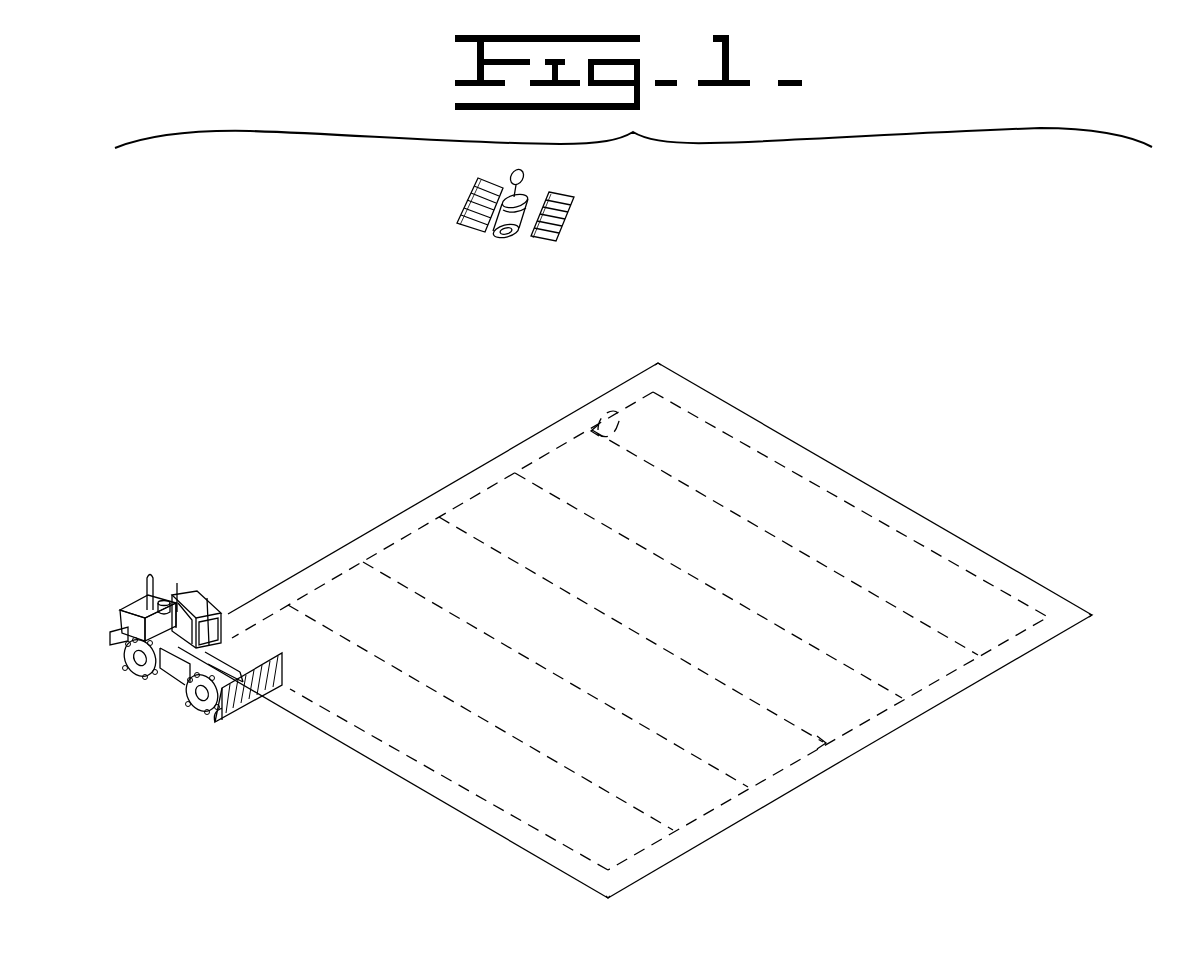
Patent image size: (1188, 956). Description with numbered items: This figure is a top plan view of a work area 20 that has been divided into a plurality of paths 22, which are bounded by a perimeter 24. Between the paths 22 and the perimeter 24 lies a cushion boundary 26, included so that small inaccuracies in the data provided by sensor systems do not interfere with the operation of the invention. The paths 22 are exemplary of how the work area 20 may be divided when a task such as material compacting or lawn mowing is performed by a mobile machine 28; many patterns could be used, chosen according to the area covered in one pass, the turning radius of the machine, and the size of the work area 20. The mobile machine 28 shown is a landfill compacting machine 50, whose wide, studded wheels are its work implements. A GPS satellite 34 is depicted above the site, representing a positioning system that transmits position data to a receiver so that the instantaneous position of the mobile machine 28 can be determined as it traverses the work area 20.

The work area 20 is at (912, 463).
The paths 22 is at (600, 414).
The perimeter 24 is at (1025, 655).
The cushion boundary 26 is at (852, 746).
The mobile machine 28 is at (126, 596).
The GPS satellite 34 is at (590, 207).
The landfill compacting machine 50 is at (658, 363).